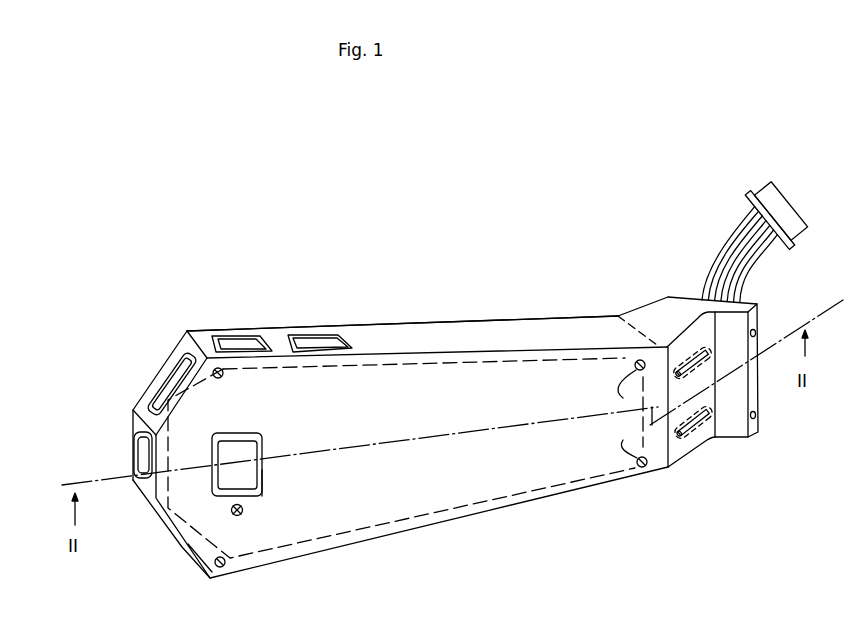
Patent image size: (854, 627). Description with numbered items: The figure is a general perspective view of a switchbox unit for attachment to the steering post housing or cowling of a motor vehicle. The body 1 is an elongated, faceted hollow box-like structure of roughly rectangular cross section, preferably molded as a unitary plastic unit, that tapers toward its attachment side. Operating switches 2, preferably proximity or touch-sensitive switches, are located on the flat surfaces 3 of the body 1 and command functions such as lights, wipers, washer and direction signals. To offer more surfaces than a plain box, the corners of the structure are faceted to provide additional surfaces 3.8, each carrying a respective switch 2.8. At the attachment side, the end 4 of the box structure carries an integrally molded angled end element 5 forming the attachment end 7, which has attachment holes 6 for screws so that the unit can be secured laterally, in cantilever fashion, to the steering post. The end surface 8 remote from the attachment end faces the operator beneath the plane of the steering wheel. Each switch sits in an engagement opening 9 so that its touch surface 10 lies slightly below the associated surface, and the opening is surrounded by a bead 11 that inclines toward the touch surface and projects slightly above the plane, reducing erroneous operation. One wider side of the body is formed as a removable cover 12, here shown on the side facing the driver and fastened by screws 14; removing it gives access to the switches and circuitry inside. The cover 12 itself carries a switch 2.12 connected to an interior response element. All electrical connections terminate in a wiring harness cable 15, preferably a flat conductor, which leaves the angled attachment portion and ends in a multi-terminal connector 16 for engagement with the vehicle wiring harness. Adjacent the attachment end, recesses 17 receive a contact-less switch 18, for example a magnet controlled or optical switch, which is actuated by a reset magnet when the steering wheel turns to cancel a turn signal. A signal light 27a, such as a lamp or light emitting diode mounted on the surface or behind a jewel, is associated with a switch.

The body 1 is at (569, 311).
The operating switches 2 is at (303, 342).
The flat surfaces 3 is at (510, 370).
The faceted surfaces 3.8 is at (182, 338).
The switch on faceted surface 2.8 is at (170, 390).
The end of the box structure 4 is at (641, 328).
The angled end element 5 is at (668, 297).
The attachment holes 6 is at (758, 415).
The attachment end 7 is at (714, 451).
The end surface 8 is at (121, 448).
The engagement openings 9 is at (212, 467).
The touch surface 10 is at (249, 458).
The bead 11 is at (242, 432).
The removable cover 12 is at (468, 456).
The switch in the cover 2.12 is at (276, 490).
The screws 14 is at (223, 376).
The wiring harness cable 15 is at (741, 257).
The multi-terminal connector 16 is at (775, 193).
The recesses 17 is at (710, 393).
The contact-less switch 18 is at (708, 348).
The signal light 27a is at (243, 515).